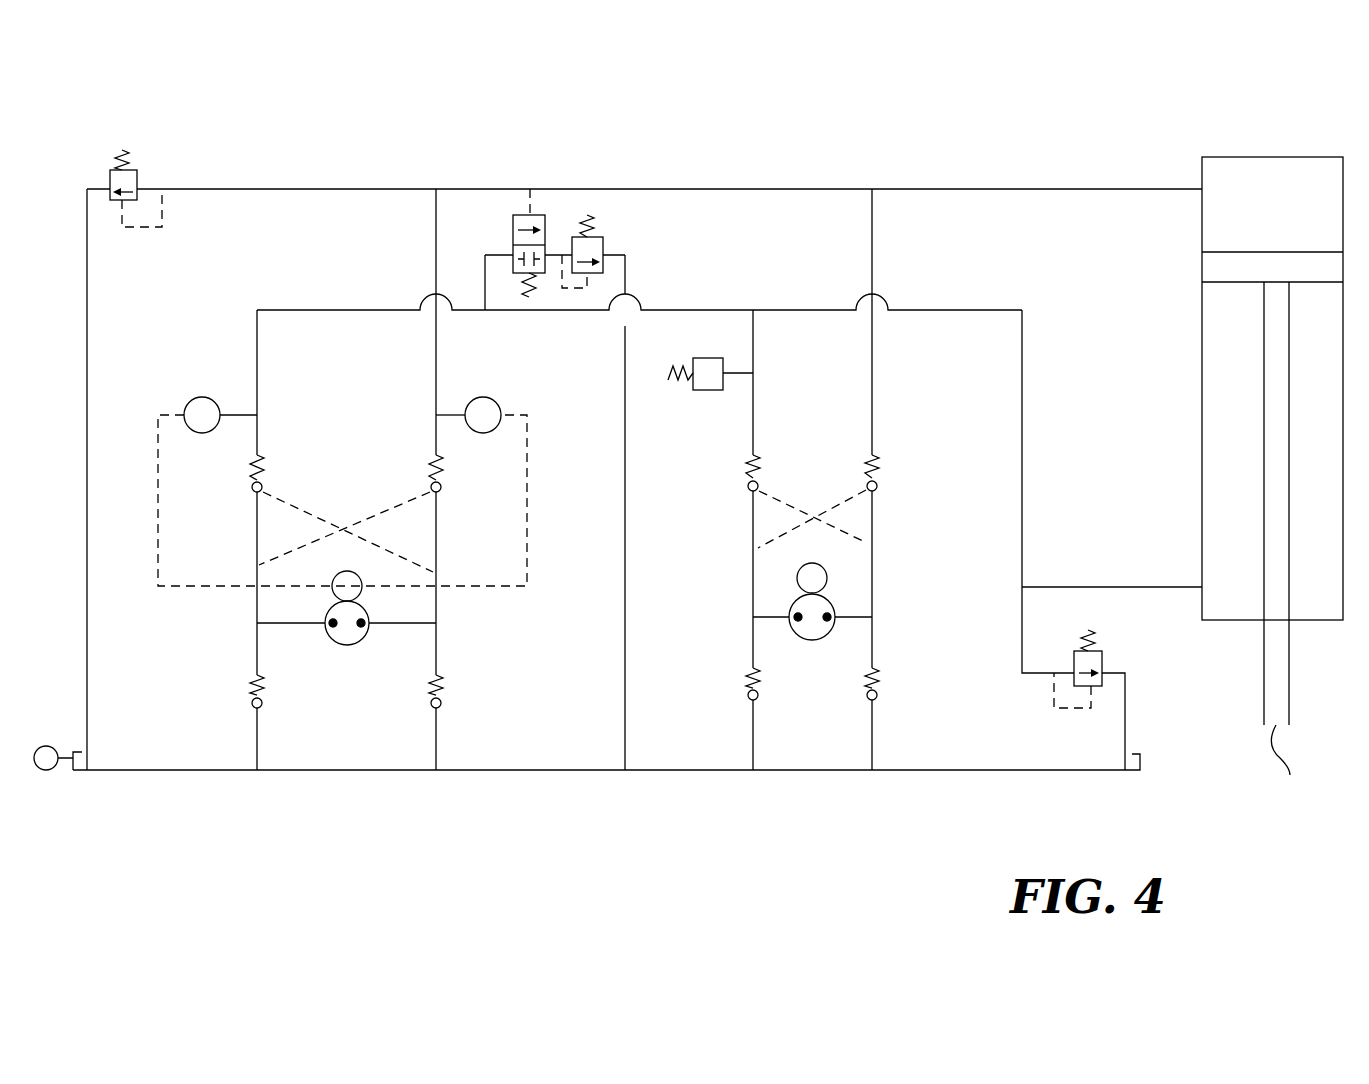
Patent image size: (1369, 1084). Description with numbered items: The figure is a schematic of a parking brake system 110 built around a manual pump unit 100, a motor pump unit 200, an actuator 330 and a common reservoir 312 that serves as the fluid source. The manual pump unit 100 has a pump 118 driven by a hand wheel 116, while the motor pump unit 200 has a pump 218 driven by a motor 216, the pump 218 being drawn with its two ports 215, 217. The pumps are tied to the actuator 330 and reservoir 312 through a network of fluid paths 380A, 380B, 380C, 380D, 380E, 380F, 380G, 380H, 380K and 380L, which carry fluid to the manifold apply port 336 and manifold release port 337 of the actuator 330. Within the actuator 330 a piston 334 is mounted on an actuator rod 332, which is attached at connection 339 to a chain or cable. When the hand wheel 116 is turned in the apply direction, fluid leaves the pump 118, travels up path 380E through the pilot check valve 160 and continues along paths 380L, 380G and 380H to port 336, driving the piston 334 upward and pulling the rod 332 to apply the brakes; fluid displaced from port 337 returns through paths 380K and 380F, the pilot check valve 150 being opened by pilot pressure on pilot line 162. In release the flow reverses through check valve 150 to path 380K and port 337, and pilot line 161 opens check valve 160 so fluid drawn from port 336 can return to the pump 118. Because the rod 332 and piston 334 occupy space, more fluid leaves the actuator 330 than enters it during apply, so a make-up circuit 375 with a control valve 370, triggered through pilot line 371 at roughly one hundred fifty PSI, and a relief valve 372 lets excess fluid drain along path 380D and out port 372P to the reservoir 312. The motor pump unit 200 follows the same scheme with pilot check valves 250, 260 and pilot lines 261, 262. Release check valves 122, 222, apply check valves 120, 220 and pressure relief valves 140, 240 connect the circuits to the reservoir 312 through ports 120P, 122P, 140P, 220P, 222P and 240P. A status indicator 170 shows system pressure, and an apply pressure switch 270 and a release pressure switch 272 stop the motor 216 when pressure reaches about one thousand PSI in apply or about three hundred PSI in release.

The parking brake system 110 is at (998, 126).
The manual pump unit 100 is at (838, 687).
The hand wheel 116 is at (828, 572).
The pump 118 is at (830, 598).
The apply check valve 120 is at (880, 700).
The release check valve 122 is at (745, 696).
The port 120P is at (875, 772).
The port 122P is at (753, 770).
The pressure relief valve 140 is at (1102, 665).
The port 140P is at (1125, 772).
The pilot check valve 150 is at (880, 480).
The pilot check valve 160 is at (745, 486).
The pilot line 161 is at (786, 496).
The pilot line 162 is at (812, 551).
The status indicator 170 is at (704, 358).
The motor pump unit 200 is at (373, 694).
The pump port 215 is at (333, 630).
The motor 216 is at (360, 565).
The pump port 217 is at (362, 629).
The pump 218 is at (330, 607).
The apply check valve 220 is at (430, 708).
The release check valve 222 is at (251, 706).
The port 220P is at (436, 770).
The port 222P is at (257, 770).
The pressure relief valve 240 is at (148, 180).
The port 240P is at (88, 770).
The pilot check valve 250 is at (442, 492).
The pilot check valve 260 is at (251, 492).
The pilot line 261 is at (351, 532).
The pilot line 262 is at (305, 545).
The apply pressure switch 270 is at (202, 397).
The release pressure switch 272 is at (494, 404).
The reservoir 312 is at (80, 748).
The actuator 330 is at (1200, 363).
The actuator rod 332 is at (1290, 702).
The piston 334 is at (1218, 262).
The manifold apply port 336 is at (1200, 586).
The manifold release port 337 is at (1200, 187).
The connection 339 is at (1304, 761).
The control valve 370 is at (513, 238).
The pilot line 371 is at (526, 212).
The relief valve 372 is at (603, 247).
The port 372P is at (625, 770).
The make-up circuit 375 is at (590, 165).
The fluid path 380A is at (87, 322).
The fluid path 380B is at (257, 395).
The fluid path 380C is at (436, 365).
The fluid path 380D is at (625, 633).
The fluid path 380E is at (753, 425).
The fluid path 380F is at (872, 372).
The fluid path 380G is at (1022, 438).
The fluid path 380H is at (1088, 587).
The fluid path 380K is at (310, 188).
The fluid path 380L is at (318, 309).